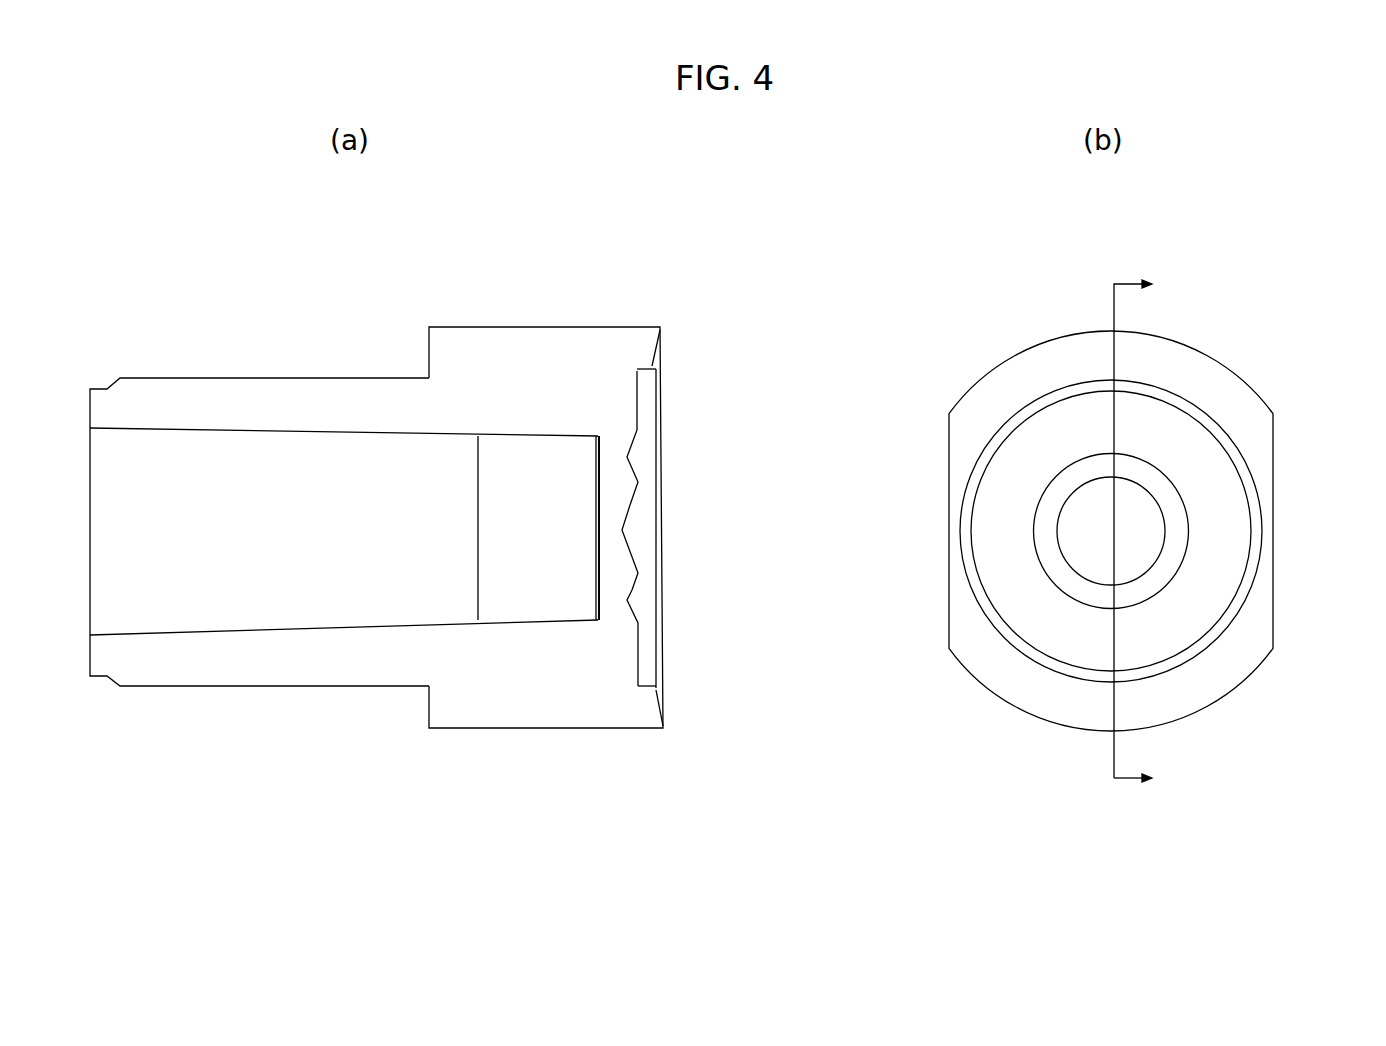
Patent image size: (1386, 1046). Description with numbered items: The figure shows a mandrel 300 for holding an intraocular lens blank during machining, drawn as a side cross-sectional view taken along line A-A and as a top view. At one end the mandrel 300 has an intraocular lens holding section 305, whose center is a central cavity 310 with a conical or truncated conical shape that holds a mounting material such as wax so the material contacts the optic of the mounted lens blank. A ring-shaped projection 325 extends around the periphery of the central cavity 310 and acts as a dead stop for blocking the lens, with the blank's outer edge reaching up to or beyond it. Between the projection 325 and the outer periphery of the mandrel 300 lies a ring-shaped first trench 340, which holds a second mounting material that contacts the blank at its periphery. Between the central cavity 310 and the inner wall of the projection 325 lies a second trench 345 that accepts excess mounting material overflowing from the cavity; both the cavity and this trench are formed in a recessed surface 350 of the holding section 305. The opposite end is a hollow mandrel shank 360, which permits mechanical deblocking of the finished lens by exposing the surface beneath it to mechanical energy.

The mandrel 300 is at (738, 474).
The intraocular lens holding section 305 is at (695, 395).
The central cavity 310 is at (640, 528).
The projection 325 is at (657, 685).
The first trench 340 is at (658, 350).
The second trench 345 is at (640, 457).
The recessed surface 350 is at (640, 640).
The hollow mandrel shank 360 is at (210, 666).